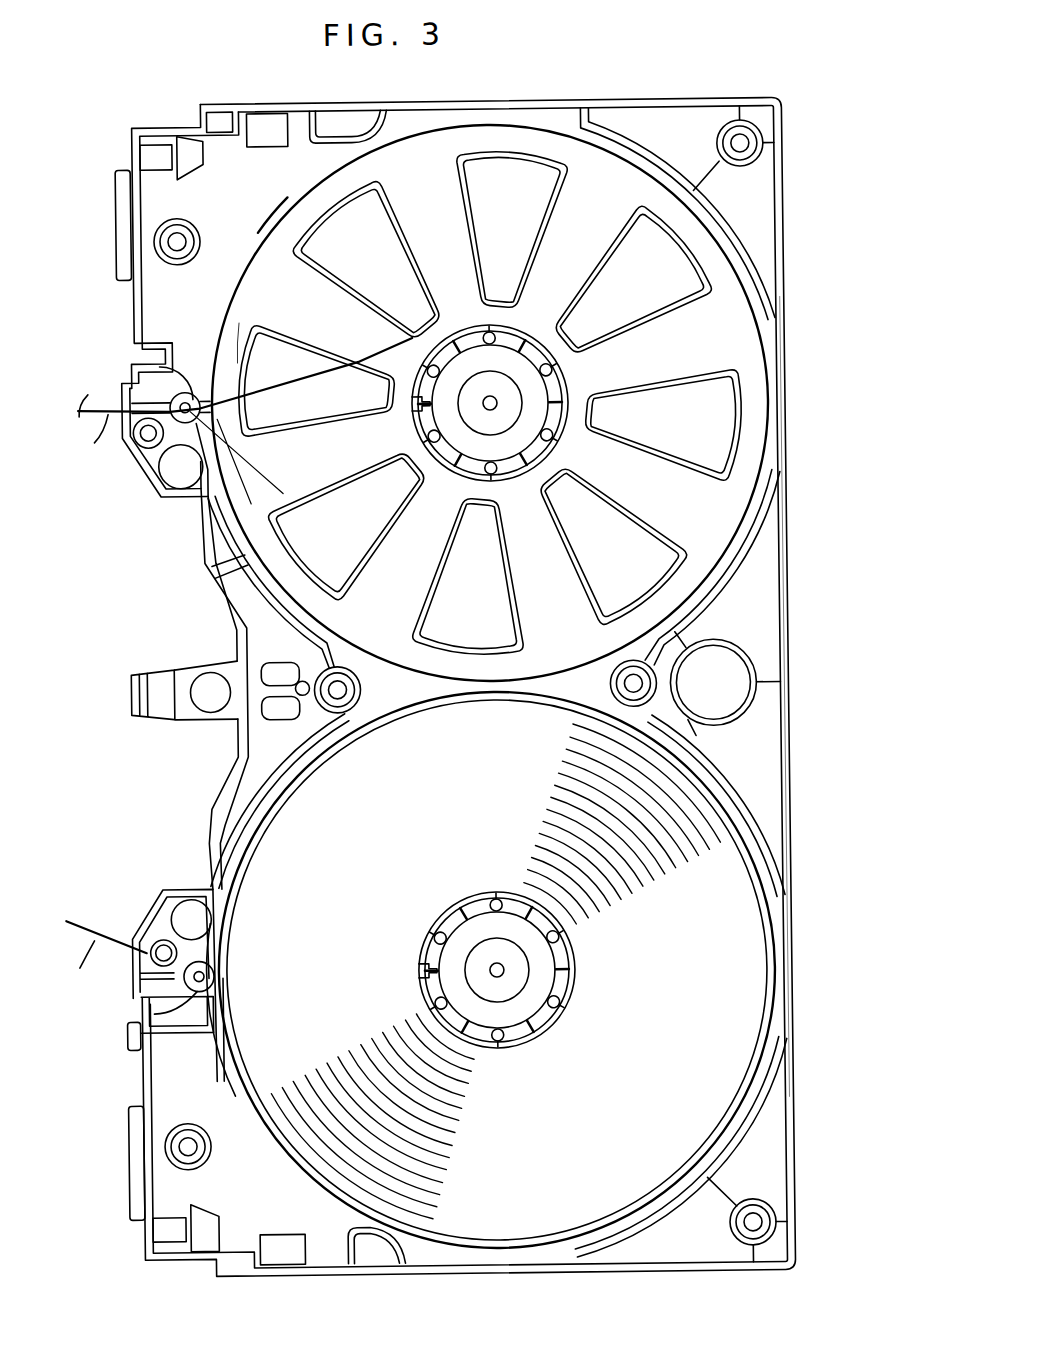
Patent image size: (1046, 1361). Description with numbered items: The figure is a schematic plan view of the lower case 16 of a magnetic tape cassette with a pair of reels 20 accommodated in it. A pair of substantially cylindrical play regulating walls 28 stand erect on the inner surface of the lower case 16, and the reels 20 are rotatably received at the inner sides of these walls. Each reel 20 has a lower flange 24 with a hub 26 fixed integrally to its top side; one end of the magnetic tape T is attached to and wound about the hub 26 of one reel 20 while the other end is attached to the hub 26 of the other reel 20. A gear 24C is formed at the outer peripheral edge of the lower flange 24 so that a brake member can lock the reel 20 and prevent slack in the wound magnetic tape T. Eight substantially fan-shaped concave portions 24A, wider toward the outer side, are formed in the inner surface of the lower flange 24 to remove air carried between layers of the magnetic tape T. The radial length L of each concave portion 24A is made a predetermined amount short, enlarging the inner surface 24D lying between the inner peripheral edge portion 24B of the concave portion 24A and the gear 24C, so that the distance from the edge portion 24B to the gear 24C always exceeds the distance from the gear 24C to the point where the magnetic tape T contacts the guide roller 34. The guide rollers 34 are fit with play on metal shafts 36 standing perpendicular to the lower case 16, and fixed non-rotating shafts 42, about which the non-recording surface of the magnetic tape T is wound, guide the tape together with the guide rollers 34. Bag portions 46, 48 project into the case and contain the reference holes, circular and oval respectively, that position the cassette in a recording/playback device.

The lower case 16 is at (590, 95).
The reel 20 is at (722, 913).
The lower flange 24 is at (428, 190).
The concave portion 24A is at (496, 180).
The inner peripheral edge portion 24B is at (330, 211).
The gear 24C is at (275, 224).
The inner surface 24D is at (241, 339).
The hub 26 is at (540, 398).
The play regulating wall 28 is at (781, 491).
The guide roller 34 is at (167, 359).
The shaft 36 is at (195, 990).
The shaft 42 is at (142, 444).
The bag portion 46 is at (170, 469).
The bag portion 48 is at (182, 911).
The magnetic tape T is at (230, 659).
The length L is at (680, 254).